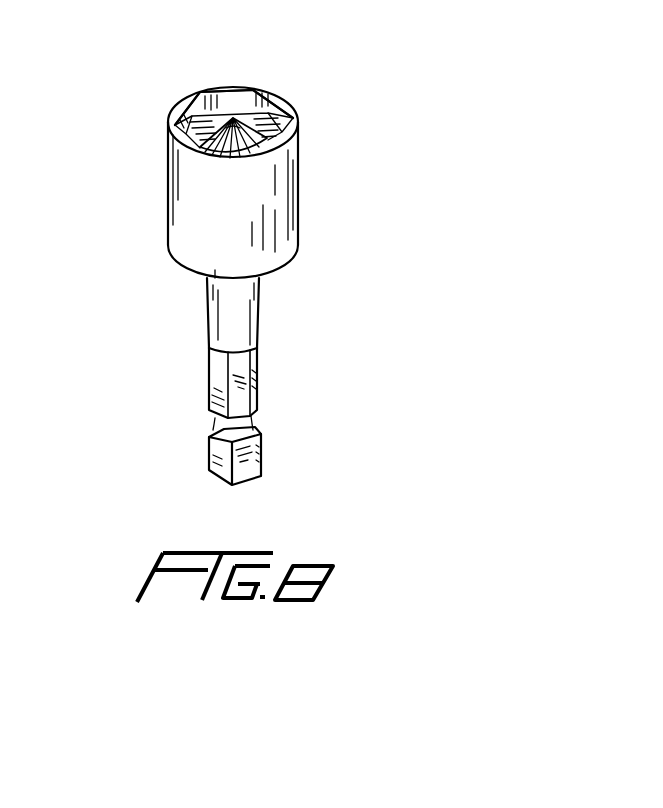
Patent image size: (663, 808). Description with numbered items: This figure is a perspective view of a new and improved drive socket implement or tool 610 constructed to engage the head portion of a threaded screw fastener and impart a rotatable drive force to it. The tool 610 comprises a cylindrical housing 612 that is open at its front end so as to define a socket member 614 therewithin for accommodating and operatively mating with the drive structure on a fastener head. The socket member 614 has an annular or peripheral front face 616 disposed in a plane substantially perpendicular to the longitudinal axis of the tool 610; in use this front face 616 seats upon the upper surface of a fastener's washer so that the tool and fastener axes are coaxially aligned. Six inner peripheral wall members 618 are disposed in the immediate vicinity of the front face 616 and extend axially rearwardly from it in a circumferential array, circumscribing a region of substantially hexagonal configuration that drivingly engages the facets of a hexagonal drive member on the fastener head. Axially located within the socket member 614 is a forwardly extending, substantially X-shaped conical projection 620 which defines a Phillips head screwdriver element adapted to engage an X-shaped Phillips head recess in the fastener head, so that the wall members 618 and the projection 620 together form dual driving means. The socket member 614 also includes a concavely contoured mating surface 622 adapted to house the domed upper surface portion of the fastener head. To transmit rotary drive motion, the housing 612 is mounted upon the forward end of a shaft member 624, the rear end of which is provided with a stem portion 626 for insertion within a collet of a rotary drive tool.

The drive socket implement or tool 610 is at (403, 79).
The cylindrical housing 612 is at (260, 253).
The socket member 614 is at (243, 110).
The annular or peripheral front face 616 is at (280, 112).
The inner peripheral wall members 618 is at (198, 90).
The X-shaped conical projection 620 is at (232, 153).
The concavely contoured mating surface 622 is at (283, 140).
The shaft member 624 is at (207, 386).
The stem portion 626 is at (254, 463).